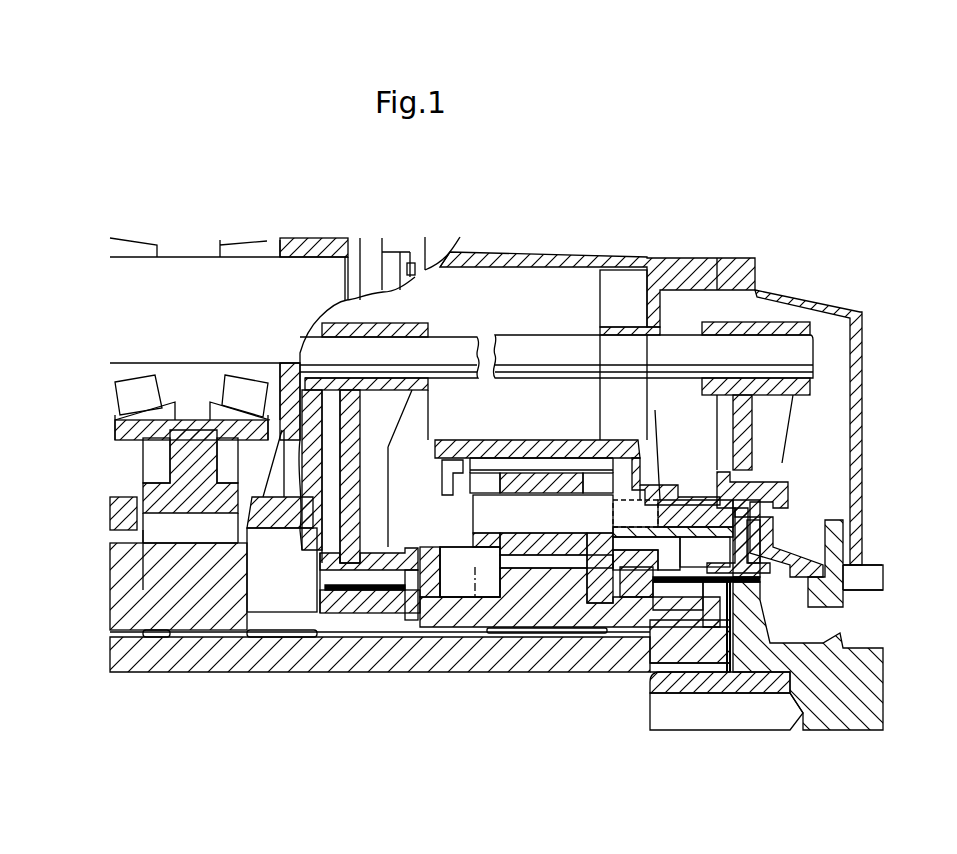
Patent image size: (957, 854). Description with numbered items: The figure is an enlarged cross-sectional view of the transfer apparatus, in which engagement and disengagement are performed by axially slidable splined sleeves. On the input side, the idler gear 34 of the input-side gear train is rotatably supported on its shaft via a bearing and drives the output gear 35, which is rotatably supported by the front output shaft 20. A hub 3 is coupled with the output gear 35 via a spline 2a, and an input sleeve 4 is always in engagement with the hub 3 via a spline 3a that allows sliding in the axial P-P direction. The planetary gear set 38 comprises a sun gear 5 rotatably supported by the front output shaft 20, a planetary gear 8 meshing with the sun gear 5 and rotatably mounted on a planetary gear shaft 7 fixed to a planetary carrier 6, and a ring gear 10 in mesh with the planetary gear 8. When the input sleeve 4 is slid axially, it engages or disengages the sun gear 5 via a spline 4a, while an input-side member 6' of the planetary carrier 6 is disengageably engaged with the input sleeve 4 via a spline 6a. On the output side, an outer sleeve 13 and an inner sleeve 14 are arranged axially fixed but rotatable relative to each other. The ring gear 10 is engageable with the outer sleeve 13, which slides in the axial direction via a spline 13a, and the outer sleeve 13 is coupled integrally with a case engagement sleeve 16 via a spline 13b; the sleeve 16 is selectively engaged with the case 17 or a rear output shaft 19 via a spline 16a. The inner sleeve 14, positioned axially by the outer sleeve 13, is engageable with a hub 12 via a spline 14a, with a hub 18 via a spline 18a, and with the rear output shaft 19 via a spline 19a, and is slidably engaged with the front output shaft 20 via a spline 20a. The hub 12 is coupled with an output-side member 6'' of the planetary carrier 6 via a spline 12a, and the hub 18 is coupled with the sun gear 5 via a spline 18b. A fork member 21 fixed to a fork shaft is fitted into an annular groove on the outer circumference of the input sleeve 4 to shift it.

The spline 2a is at (333, 620).
The hub 3 is at (350, 620).
The spline 3a is at (384, 620).
The input sleeve 4 is at (430, 620).
The spline 4a is at (433, 620).
The sun gear 5 is at (522, 637).
The planetary carrier 6 is at (452, 517).
The input-side member of the planetary carrier 6' is at (556, 386).
The output-side member of the planetary carrier 6'' is at (564, 701).
The spline 6a is at (473, 556).
The planetary gear shaft 7 is at (542, 500).
The planetary gear 8 is at (565, 470).
The ring gear 10 is at (530, 455).
The hub 12 is at (612, 600).
The spline 12a is at (600, 620).
The outer sleeve 13 is at (787, 470).
The spline 13a is at (657, 510).
The spline 13b is at (805, 488).
The inner sleeve 14 is at (770, 508).
The spline 14a is at (743, 452).
The case engagement sleeve 16 is at (782, 537).
The spline 16a is at (840, 560).
The case 17 is at (868, 582).
The hub 18 is at (668, 670).
The spline 18a is at (688, 620).
The spline 18b is at (717, 620).
The rear output shaft 19 is at (840, 687).
The spline 19a is at (773, 620).
The front output shaft 20 is at (225, 660).
The spline 20a is at (750, 620).
The fork member 21 is at (820, 340).
The idler gear 34 is at (190, 462).
The output gear 35 is at (180, 583).
The planetary gear set 38 is at (598, 450).